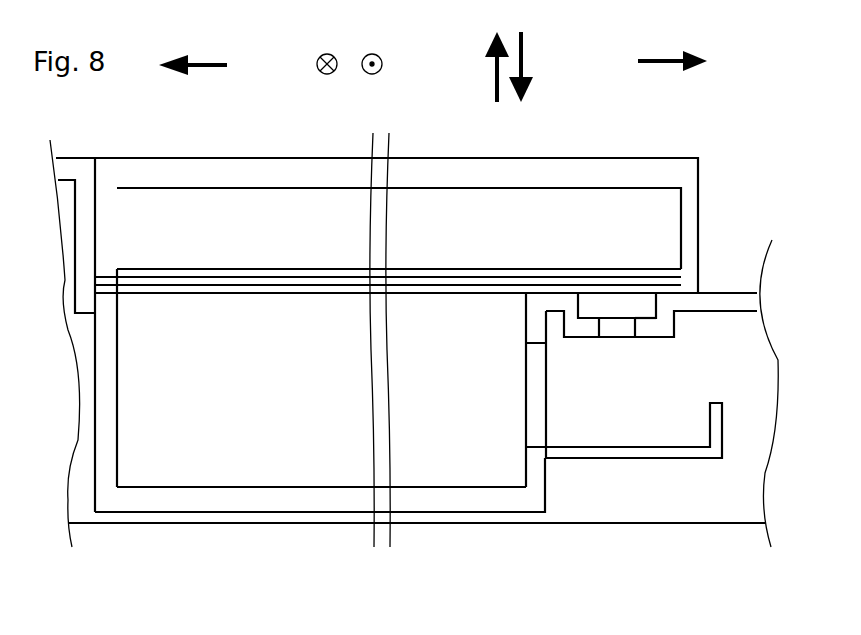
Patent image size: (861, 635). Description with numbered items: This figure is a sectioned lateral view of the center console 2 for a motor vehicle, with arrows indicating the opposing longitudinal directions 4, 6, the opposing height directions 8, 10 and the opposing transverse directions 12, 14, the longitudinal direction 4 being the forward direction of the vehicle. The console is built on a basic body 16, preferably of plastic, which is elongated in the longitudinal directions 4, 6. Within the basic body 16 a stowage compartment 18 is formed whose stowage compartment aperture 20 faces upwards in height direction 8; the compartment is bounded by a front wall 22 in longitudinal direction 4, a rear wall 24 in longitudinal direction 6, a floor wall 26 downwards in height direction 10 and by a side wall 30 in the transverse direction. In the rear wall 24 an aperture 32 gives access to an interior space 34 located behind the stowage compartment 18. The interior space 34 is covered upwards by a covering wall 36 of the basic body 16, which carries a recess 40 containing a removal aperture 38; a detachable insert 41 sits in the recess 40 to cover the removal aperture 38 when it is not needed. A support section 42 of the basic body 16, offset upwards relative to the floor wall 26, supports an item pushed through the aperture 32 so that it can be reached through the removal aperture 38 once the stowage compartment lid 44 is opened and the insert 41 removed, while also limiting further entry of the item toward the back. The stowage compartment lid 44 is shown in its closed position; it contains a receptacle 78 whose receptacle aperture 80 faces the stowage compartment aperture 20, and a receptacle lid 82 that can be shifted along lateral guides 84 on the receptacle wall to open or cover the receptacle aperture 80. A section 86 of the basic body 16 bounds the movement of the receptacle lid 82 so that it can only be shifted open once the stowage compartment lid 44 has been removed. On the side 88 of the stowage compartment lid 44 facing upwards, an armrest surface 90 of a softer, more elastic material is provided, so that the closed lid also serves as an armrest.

The center console 2 is at (725, 122).
The longitudinal direction 4 is at (202, 63).
The longitudinal direction 6 is at (652, 66).
The height direction 8 is at (493, 80).
The height direction 10 is at (528, 57).
The transverse direction 12 is at (383, 62).
The transverse direction 14 is at (316, 65).
The basic body 16 is at (663, 535).
The stowage compartment 18 is at (133, 388).
The stowage compartment aperture 20 is at (273, 276).
The front wall 22 is at (106, 425).
The rear wall 24 is at (538, 475).
The floor wall 26 is at (247, 500).
The side wall 30 is at (155, 442).
The aperture 32 is at (535, 420).
The interior space 34 is at (657, 398).
The covering wall 36 is at (712, 300).
The removal aperture 38 is at (620, 328).
The recess 40 is at (655, 291).
The insert 41 is at (640, 318).
The support section 42 is at (638, 455).
The stowage compartment lid 44 is at (712, 167).
The receptacle 78 is at (424, 243).
The receptacle aperture 80 is at (342, 302).
The receptacle lid 82 is at (227, 283).
The lateral guides 84 is at (187, 290).
The section 86 is at (85, 202).
The side 88 is at (183, 158).
The armrest surface 90 is at (203, 152).